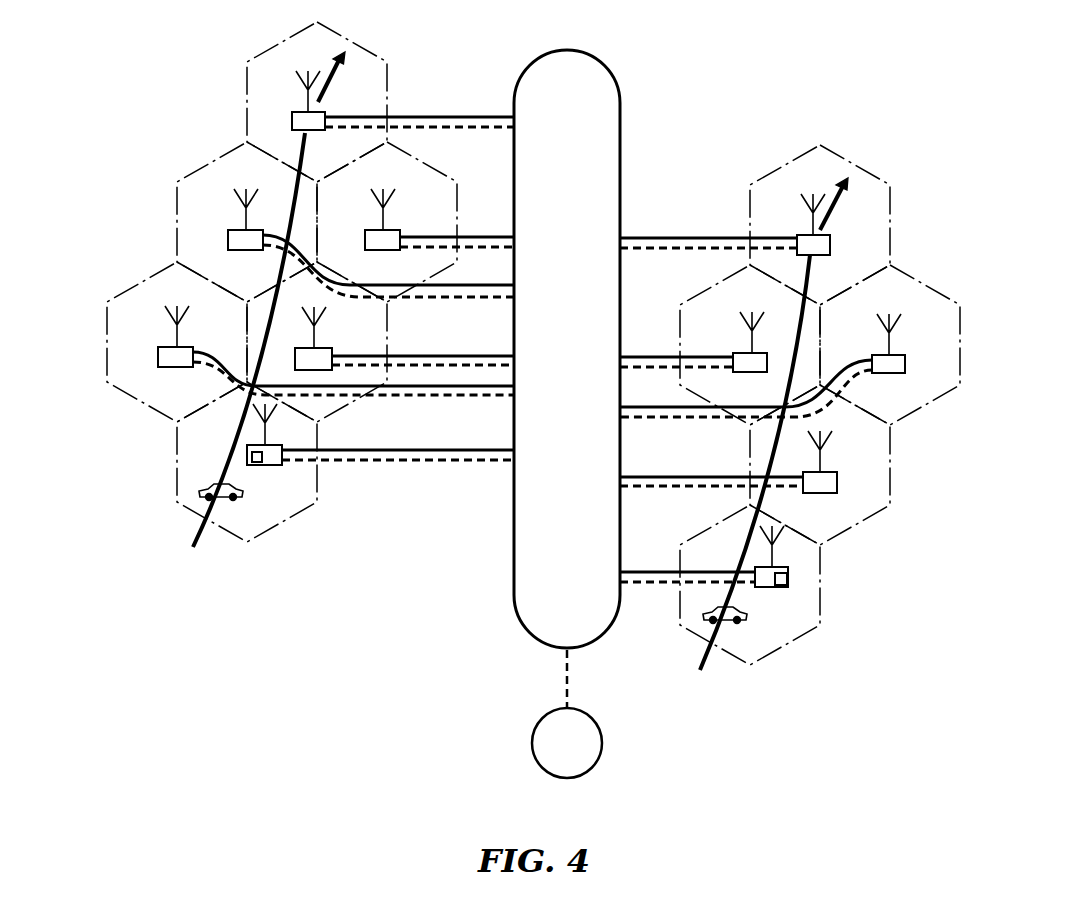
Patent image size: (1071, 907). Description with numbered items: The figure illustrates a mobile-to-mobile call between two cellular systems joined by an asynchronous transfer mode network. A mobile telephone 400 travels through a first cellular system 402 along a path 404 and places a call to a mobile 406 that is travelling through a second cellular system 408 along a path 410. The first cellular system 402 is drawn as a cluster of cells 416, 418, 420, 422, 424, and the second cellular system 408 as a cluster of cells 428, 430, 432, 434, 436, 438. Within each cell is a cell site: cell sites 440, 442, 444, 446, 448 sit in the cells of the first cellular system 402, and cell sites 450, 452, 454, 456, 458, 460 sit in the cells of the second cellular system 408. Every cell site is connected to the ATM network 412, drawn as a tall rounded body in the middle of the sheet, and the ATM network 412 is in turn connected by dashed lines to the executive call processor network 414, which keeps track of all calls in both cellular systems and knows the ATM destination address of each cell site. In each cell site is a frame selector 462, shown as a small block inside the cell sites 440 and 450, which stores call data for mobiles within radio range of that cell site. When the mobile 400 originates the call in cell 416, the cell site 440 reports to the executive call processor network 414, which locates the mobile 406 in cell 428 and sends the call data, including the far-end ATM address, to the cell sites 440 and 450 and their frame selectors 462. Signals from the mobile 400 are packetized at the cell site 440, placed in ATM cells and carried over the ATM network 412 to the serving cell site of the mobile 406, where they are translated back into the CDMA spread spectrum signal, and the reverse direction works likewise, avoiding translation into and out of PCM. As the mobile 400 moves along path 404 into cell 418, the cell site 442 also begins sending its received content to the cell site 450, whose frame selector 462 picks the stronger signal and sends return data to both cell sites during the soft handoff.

The mobile telephone 400 is at (752, 614).
The first cellular system 402 is at (795, 405).
The path 404 is at (703, 672).
The mobile 406 is at (246, 490).
The second cellular system 408 is at (305, 282).
The path 410 is at (196, 549).
The ATM network 412 is at (622, 90).
The executive call processor (ECP) network 414 is at (602, 731).
The cell 416 is at (821, 583).
The cell 418 is at (890, 463).
The cell 420 is at (682, 328).
The cell 422 is at (910, 408).
The cell 424 is at (890, 212).
The cell 428 is at (176, 458).
The cell 430 is at (388, 326).
The cell 432 is at (156, 410).
The cell 434 is at (178, 206).
The cell 436 is at (455, 206).
The cell 438 is at (248, 110).
The cell site 440 is at (757, 568).
The cell site 442 is at (832, 473).
The cell site 444 is at (737, 354).
The cell site 446 is at (902, 356).
The cell site 448 is at (800, 236).
The cell site 450 is at (250, 446).
The cell site 452 is at (327, 350).
The cell site 454 is at (160, 348).
The cell site 456 is at (232, 231).
The cell site 458 is at (369, 231).
The cell site 460 is at (298, 112).
The frame selector 462 is at (318, 598).